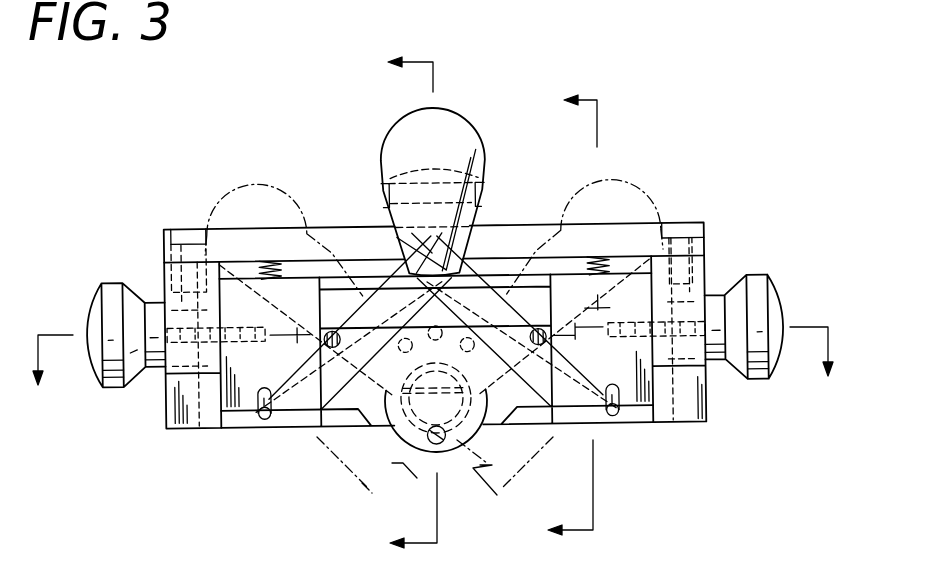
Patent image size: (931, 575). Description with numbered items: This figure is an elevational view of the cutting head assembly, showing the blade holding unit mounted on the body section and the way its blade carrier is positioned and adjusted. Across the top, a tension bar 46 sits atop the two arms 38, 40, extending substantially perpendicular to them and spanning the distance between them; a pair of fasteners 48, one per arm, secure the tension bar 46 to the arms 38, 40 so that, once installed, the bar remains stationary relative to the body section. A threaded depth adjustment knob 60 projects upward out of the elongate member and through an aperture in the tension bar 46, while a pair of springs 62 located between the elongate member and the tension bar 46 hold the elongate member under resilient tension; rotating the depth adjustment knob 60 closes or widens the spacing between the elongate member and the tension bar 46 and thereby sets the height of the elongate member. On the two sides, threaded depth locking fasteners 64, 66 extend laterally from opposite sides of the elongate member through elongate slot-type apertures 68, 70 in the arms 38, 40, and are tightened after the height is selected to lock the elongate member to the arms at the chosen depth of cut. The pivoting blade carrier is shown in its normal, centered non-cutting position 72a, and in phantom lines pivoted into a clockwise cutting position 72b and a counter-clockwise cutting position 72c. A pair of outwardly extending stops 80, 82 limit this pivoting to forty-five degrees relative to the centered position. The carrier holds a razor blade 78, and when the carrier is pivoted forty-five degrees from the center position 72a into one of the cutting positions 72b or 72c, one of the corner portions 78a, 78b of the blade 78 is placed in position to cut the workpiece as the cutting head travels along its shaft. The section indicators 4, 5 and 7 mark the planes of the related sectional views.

The arm 38 is at (703, 402).
The arm 40 is at (172, 412).
The tension bar 46 is at (350, 227).
The fasteners 48 is at (184, 226).
The depth adjustment knob 60 is at (482, 197).
The springs 62 is at (272, 259).
The depth locking fastener 64 is at (110, 279).
The depth locking fastener 66 is at (778, 297).
The slot-type aperture 68 is at (178, 355).
The slot-type aperture 70 is at (690, 306).
The centered non-cutting position 72a is at (462, 120).
The clockwise cutting position 72b is at (650, 212).
The counter-clockwise cutting position 72c is at (218, 212).
The razor blade 78 is at (345, 422).
The corner portion of the blade 78a is at (413, 457).
The corner portion of the blade 78b is at (485, 462).
The stop 80 is at (262, 418).
The stop 82 is at (613, 418).
The section line 4- 4 is at (395, 302).
The section line 5- 5 is at (559, 319).
The section line 7- 7 is at (430, 375).